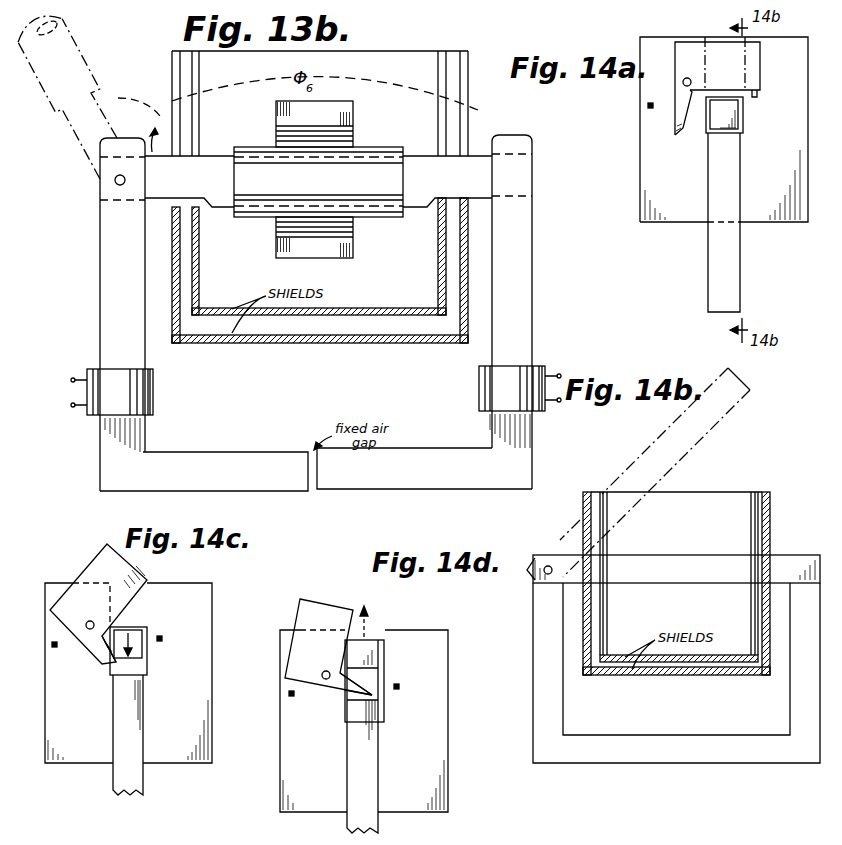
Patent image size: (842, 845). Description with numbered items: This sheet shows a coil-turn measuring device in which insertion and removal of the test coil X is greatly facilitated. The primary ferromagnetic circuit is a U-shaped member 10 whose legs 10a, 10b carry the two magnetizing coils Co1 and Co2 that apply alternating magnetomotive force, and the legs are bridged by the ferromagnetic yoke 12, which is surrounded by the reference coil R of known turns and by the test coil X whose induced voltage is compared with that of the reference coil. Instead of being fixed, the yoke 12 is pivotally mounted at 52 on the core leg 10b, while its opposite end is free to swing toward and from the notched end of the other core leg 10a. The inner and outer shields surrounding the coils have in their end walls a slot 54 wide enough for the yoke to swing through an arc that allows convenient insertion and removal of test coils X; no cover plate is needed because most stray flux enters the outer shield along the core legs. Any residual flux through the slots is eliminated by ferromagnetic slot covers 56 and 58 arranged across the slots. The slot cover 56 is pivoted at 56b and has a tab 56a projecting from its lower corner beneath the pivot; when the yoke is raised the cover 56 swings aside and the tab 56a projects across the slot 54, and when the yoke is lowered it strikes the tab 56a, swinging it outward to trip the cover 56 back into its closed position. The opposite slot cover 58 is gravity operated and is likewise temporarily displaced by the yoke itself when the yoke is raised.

In FIG. 13B, the U-shaped member 10 is at (333, 313).
In FIG. 14B, the U-shaped member 10 is at (797, 687).
In FIG. 13B, the core leg 10a is at (523, 275).
In FIG. 13B, the core leg 10b is at (122, 314).
In FIG. 13B, the yoke 12 is at (110, 103).
In FIG. 14A, the yoke 12 is at (730, 116).
In FIG. 14B, the yoke 12 is at (798, 563).
In FIG. 14C, the yoke 12 is at (140, 628).
In FIG. 14D, the yoke 12 is at (372, 640).
In FIG. 13B, the pivot 52 is at (115, 183).
In FIG. 14B, the pivot 52 is at (548, 565).
In FIG. 14A, the slot 54 is at (716, 42).
In FIG. 14C, the slot 54 is at (133, 627).
In FIG. 14D, the slot 54 is at (370, 640).
In FIG. 14B, the slot cover 56 is at (775, 527).
In FIG. 14C, the slot cover 56 is at (148, 579).
In FIG. 14D, the slot cover 56 is at (300, 607).
In FIG. 14A, the tab 56a is at (688, 126).
In FIG. 14C, the tab 56a is at (100, 650).
In FIG. 14D, the tab 56a is at (360, 700).
In FIG. 14A, the pivot 56b is at (684, 79).
In FIG. 14C, the pivot 56b is at (88, 620).
In FIG. 14D, the pivot 56b is at (324, 680).
In FIG. 14B, the slot cover 58 is at (582, 507).
In FIG. 13B, the reference coil R is at (376, 147).
In FIG. 13B, the test coil X is at (348, 117).
In FIG. 13B, the magnetizing coil Co1 is at (153, 400).
In FIG. 13B, the magnetizing coil Co2 is at (479, 398).